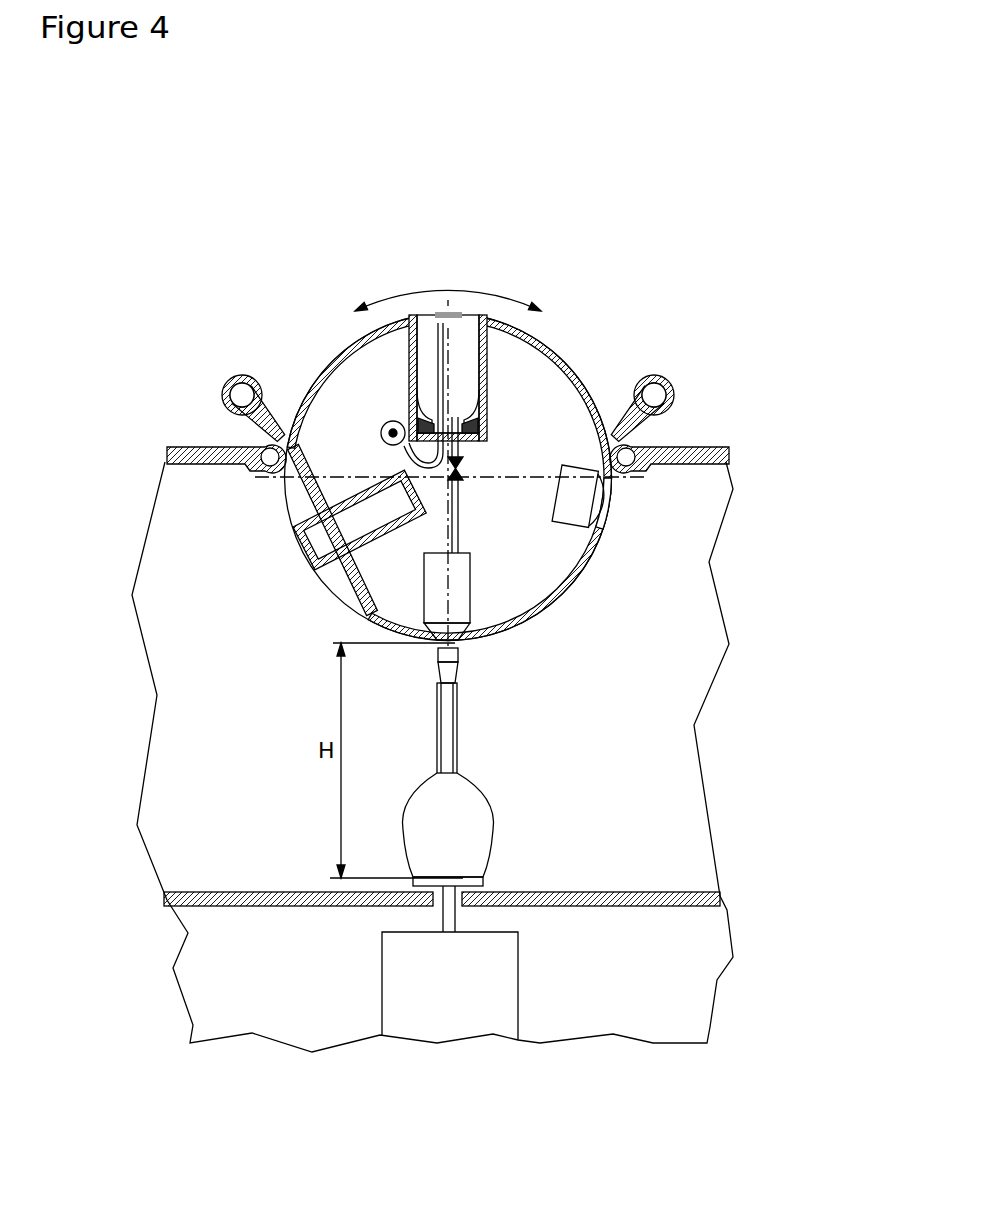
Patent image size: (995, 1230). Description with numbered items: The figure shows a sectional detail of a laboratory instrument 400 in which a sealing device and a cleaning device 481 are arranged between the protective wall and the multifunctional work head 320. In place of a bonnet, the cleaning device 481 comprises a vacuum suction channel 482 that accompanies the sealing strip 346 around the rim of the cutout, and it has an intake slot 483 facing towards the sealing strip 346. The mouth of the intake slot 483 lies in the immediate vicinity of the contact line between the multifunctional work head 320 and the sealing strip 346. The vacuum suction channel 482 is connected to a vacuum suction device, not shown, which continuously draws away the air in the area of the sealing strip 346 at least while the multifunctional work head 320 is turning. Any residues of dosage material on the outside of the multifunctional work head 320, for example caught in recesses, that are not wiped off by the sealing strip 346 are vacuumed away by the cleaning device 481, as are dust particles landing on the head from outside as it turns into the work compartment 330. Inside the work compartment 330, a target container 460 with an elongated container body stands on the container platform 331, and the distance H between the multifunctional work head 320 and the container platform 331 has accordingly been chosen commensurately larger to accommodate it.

The laboratory instrument 400 is at (483, 247).
The cleaning device 481 is at (202, 382).
The vacuum suction channel 482 is at (243, 397).
The intake slot 483 is at (283, 440).
The sealing strip 346 is at (250, 444).
The multifunctional work head 320 is at (583, 579).
The work compartment 330 is at (432, 757).
The target container 460 is at (450, 812).
The container platform 331 is at (463, 880).